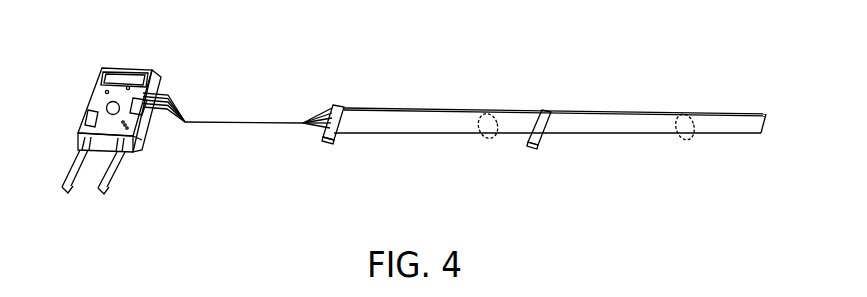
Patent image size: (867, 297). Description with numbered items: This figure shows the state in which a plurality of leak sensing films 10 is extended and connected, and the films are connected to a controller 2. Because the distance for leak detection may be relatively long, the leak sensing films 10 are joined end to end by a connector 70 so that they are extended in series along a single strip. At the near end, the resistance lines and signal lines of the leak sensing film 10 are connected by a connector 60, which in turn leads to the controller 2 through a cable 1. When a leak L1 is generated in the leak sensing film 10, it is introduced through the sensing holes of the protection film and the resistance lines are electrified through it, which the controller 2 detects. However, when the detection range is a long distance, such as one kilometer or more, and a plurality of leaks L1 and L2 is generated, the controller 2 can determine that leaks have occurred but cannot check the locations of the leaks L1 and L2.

The cable 1 is at (242, 123).
The controller 2 is at (140, 128).
The leak sensing film 10 is at (550, 94).
The connector 60 is at (330, 144).
The connector 70 is at (532, 149).
The leak L1 is at (494, 113).
The leak L2 is at (696, 113).